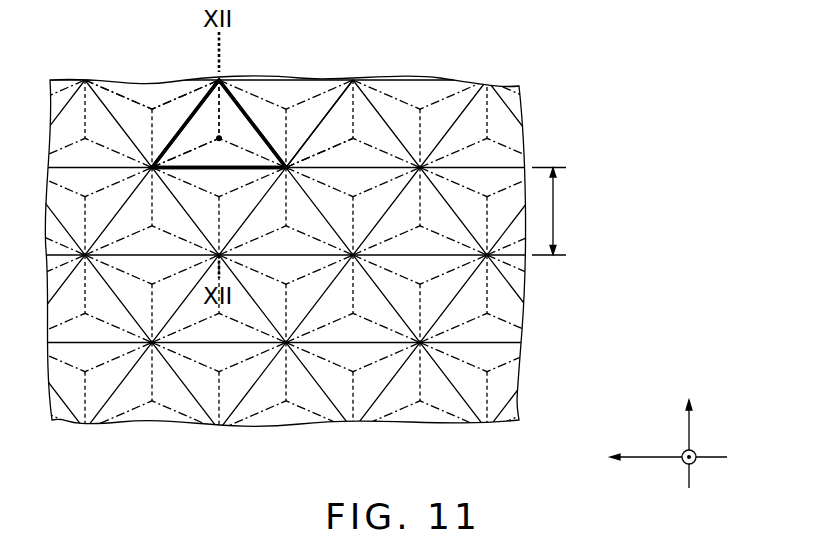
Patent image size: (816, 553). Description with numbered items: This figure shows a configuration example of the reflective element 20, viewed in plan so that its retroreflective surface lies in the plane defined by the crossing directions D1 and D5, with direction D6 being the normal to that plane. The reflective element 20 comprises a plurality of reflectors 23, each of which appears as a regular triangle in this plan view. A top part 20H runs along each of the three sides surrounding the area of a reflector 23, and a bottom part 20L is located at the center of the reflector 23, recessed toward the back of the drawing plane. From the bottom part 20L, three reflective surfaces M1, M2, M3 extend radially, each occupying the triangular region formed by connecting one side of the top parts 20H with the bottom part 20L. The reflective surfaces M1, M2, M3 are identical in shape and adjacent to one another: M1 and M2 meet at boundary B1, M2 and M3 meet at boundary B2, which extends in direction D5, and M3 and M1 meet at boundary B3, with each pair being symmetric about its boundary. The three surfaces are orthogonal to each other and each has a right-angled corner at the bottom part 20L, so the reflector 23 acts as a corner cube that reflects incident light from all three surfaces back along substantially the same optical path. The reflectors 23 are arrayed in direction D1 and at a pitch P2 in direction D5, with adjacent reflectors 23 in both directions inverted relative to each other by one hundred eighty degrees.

The reflective element 20 is at (530, 65).
The top part 20H is at (234, 121).
The bottom part 20L is at (179, 141).
The reflector 23 is at (190, 179).
The boundary B1 is at (308, 95).
The boundary B2 is at (248, 136).
The boundary B3 is at (109, 82).
The reflective surface M1 is at (229, 152).
The reflective surface M2 is at (296, 141).
The reflective surface M3 is at (153, 110).
The pitch P2 is at (561, 212).
The direction D1 is at (629, 458).
The direction D5 is at (693, 410).
The direction D6 is at (715, 459).